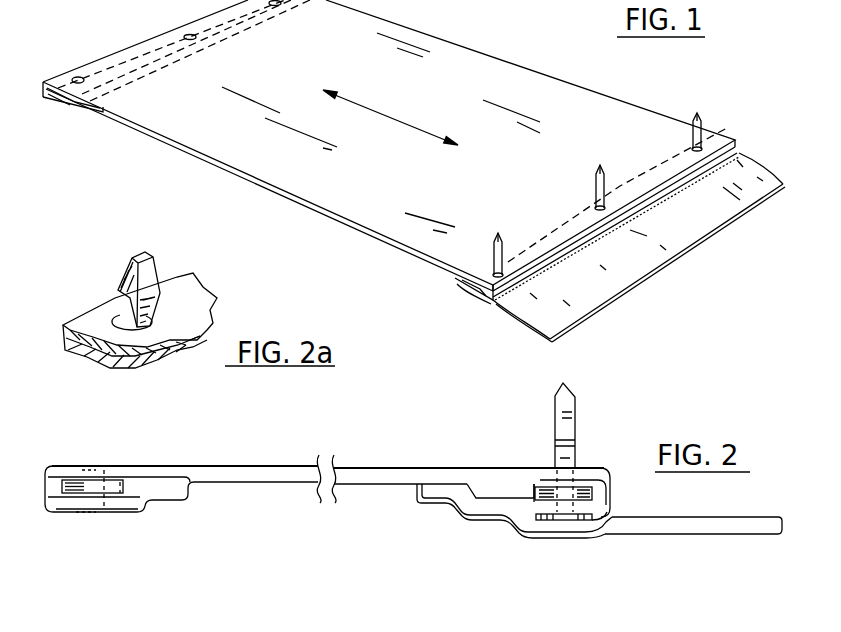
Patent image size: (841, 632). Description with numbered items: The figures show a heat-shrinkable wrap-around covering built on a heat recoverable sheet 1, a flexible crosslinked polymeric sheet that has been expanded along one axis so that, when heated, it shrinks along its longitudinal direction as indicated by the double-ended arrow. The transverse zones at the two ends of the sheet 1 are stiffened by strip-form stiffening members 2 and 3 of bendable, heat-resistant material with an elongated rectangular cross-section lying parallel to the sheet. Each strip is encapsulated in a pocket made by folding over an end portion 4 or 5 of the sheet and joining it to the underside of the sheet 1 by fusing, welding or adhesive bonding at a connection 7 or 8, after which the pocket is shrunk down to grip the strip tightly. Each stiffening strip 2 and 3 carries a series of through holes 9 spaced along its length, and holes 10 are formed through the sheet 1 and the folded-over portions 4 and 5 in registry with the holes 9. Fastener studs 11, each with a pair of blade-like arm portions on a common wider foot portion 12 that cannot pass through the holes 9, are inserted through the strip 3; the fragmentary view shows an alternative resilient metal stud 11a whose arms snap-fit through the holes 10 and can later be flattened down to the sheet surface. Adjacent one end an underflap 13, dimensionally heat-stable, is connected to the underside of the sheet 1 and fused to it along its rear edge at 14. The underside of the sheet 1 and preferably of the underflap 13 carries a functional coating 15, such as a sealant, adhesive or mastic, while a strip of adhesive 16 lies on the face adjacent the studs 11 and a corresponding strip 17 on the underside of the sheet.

In FIG. 1, the heat recoverable sheet 1 is at (470, 65).
In FIG. 2a, the heat recoverable sheet 1 is at (91, 320).
In FIG. 2, the heat recoverable sheet 1 is at (271, 465).
In FIG. 1, the stiffening member 2 is at (52, 102).
In FIG. 2, the stiffening member 2 is at (70, 494).
In FIG. 1, the stiffening member 3 is at (472, 292).
In FIG. 2, the stiffening member 3 is at (595, 490).
In FIG. 2, the end portion 4 is at (118, 503).
In FIG. 2, the end portion 5 is at (593, 537).
In FIG. 2, the connection 7 is at (163, 477).
In FIG. 2, the connection 8 is at (495, 485).
In FIG. 2, the through holes 9 is at (112, 473).
In FIG. 1, the holes 10 is at (188, 34).
In FIG. 2a, the holes 10 is at (153, 321).
In FIG. 2, the holes 10 is at (76, 470).
In FIG. 1, the stud 11 is at (692, 124).
In FIG. 2, the stud 11 is at (562, 403).
In FIG. 2a, the resilient metal stud 11a is at (128, 266).
In FIG. 2, the foot portion 12 is at (557, 522).
In FIG. 1, the underflap 13 is at (680, 232).
In FIG. 2, the underflap 13 is at (660, 525).
In FIG. 2, the rear edge fusion 14 is at (440, 485).
In FIG. 2, the functional coating 15 is at (234, 486).
In FIG. 2, the strip of adhesive 16 is at (590, 466).
In FIG. 2, the strip of adhesive 17 is at (127, 517).